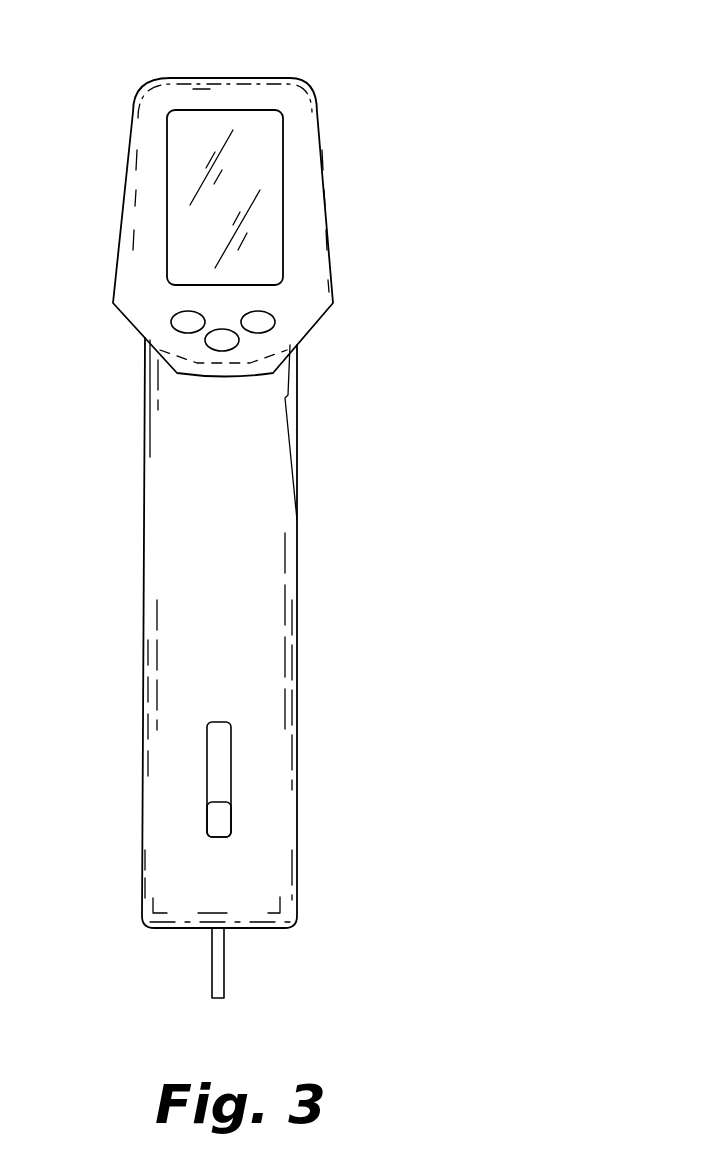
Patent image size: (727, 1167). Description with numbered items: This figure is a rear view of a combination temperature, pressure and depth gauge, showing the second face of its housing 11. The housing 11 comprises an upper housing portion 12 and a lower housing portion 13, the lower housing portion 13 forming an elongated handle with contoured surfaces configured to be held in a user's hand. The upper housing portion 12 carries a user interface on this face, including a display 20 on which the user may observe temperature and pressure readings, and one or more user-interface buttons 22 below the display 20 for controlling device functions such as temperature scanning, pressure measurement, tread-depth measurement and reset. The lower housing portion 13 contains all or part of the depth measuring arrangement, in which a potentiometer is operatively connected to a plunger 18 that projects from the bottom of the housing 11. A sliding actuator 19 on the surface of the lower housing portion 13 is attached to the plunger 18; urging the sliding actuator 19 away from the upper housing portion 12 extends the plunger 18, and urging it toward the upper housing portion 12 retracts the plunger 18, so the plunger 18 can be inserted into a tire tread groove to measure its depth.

The housing 11 is at (243, 505).
The upper housing portion 12 is at (265, 195).
The lower housing portion 13 is at (274, 633).
The plunger 18 is at (224, 975).
The sliding actuator 19 is at (218, 820).
The display 20 is at (296, 171).
The user-interface buttons 22 is at (260, 322).